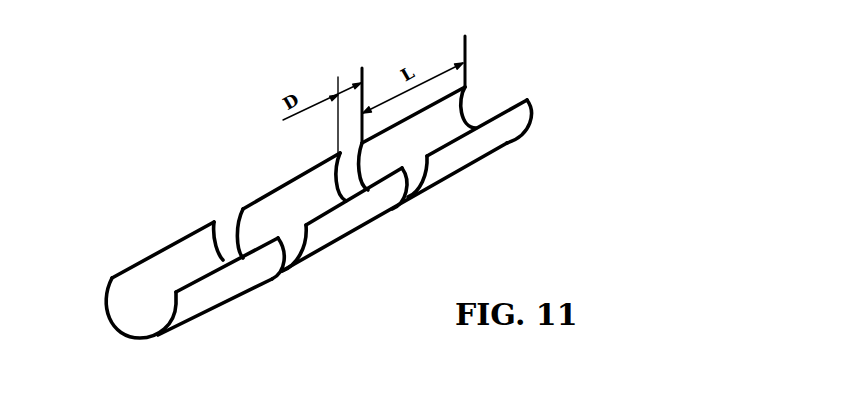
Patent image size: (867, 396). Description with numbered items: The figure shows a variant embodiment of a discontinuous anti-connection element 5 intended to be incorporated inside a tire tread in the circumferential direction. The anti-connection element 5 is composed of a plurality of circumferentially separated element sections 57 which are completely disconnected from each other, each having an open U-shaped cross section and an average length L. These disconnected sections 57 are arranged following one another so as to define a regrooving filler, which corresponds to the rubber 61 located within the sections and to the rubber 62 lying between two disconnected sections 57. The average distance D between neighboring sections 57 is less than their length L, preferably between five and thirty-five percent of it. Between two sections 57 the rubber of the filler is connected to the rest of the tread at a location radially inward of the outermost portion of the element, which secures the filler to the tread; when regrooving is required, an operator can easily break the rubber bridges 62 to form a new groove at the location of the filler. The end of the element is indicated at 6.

The anti-connection element 5 is at (336, 233).
The channel end 6 is at (133, 313).
The element section 57 is at (107, 305).
The rubber located within the elements 61 is at (178, 278).
The rubber between two disconnected sections 62 is at (286, 258).